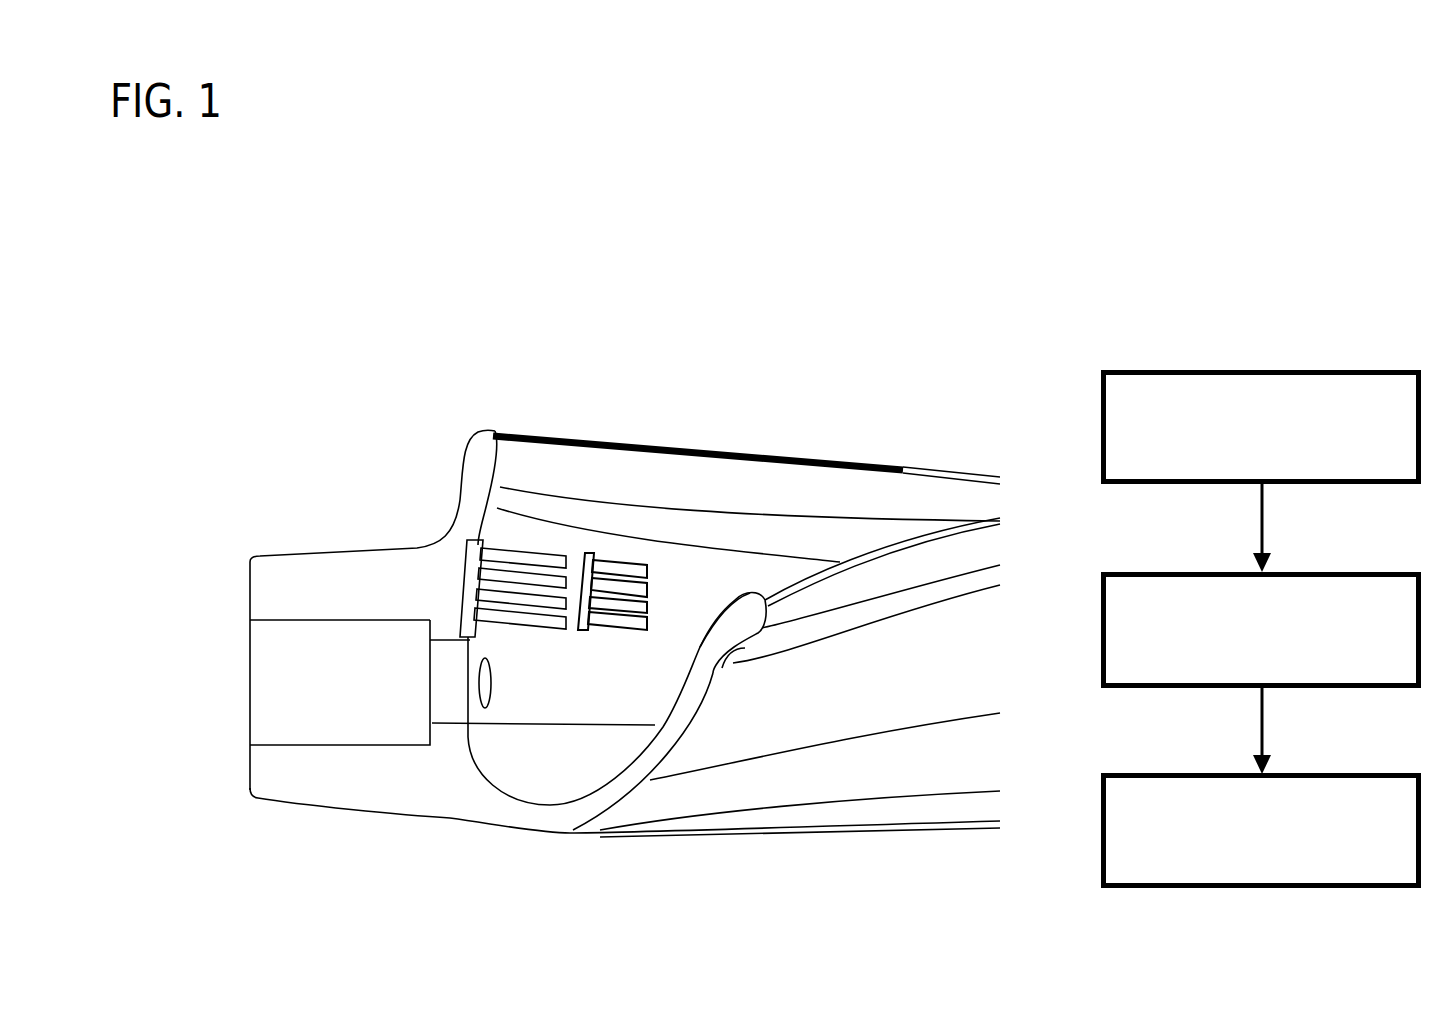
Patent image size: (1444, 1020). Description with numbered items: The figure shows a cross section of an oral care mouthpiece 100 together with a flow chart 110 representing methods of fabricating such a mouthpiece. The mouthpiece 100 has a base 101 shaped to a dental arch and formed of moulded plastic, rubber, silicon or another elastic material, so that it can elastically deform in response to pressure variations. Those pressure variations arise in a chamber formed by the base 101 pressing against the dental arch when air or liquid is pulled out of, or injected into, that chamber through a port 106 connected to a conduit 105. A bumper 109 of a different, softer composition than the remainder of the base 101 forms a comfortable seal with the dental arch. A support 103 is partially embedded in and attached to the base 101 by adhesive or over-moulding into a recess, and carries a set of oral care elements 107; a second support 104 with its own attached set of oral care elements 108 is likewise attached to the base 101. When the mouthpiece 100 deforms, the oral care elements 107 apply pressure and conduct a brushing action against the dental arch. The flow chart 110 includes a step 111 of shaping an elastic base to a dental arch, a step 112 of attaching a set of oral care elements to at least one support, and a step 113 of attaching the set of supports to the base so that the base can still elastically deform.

The oral care mouthpiece 100 is at (632, 302).
The base 101 is at (430, 572).
The support 103 is at (460, 623).
The second support 104 is at (582, 610).
The conduit 105 is at (365, 703).
The port 106 is at (483, 680).
The oral care elements 107 is at (470, 547).
The oral care elements 108 is at (603, 560).
The bumper 109 is at (597, 438).
The flow chart 110 is at (1285, 299).
The step of shaping an elastic base 111 is at (1285, 463).
The step of attaching oral care elements 112 is at (1360, 667).
The step of attaching supports to the base 113 is at (1372, 867).